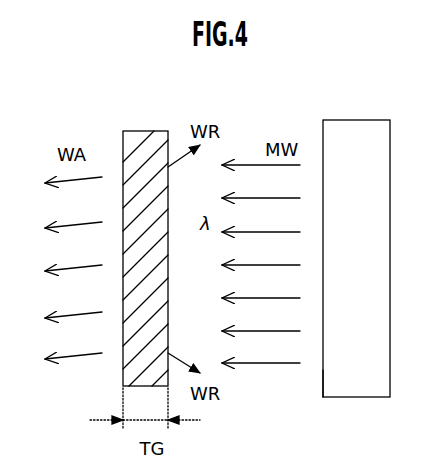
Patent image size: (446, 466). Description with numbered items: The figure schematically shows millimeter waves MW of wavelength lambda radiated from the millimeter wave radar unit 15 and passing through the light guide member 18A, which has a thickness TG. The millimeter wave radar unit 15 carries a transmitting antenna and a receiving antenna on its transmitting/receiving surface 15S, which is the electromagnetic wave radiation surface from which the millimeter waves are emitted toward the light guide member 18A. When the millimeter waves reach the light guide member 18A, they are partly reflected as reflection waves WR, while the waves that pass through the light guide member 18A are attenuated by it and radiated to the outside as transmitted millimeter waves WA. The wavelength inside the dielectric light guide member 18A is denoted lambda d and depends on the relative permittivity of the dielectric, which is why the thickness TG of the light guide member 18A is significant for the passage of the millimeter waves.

The light guide member 18A is at (146, 131).
The millimeter wave radar unit 15 is at (356, 120).
The transmitting/receiving surface 15S is at (323, 386).